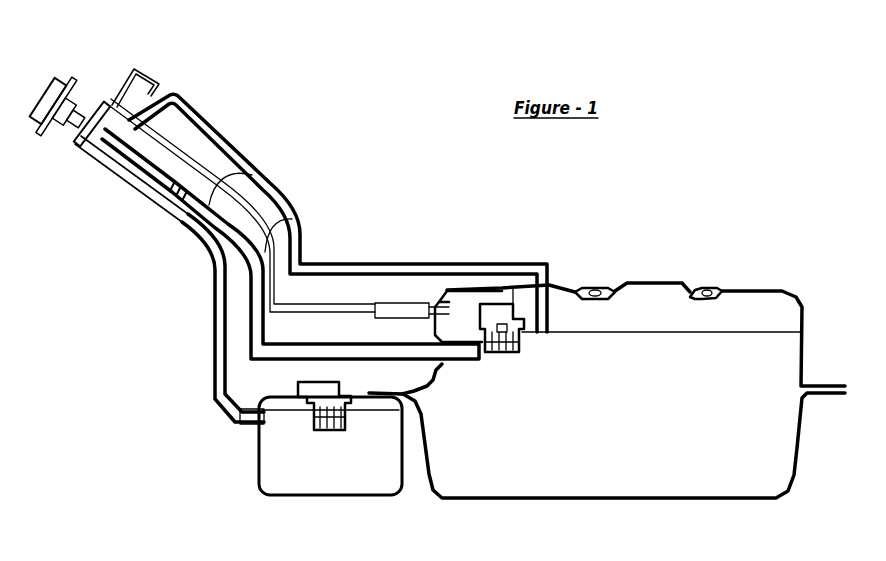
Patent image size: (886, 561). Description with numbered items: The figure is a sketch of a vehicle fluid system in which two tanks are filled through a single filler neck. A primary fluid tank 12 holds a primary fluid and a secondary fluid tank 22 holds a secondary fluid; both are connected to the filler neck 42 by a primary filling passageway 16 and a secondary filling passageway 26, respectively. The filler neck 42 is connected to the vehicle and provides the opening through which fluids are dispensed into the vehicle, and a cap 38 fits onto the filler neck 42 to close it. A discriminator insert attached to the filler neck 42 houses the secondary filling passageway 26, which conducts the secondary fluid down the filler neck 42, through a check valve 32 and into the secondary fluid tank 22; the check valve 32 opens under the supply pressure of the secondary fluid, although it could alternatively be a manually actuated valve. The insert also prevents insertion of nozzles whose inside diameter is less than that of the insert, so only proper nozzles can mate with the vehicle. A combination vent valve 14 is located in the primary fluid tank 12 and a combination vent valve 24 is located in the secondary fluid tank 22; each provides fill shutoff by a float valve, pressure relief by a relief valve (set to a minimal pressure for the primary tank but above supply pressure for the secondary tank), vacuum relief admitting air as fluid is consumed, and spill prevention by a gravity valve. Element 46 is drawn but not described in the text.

The primary fluid tank 12 is at (694, 434).
The combination vent valve 14 is at (497, 296).
The primary filling passageway 16 is at (262, 244).
The secondary fluid tank 22 is at (330, 451).
The combination vent valve 24 is at (301, 367).
The secondary filling passageway 26 is at (249, 162).
The check valve 32 is at (171, 191).
The cap 38 is at (50, 66).
The filler neck 42 is at (102, 98).
The filler neck 46 is at (86, 140).